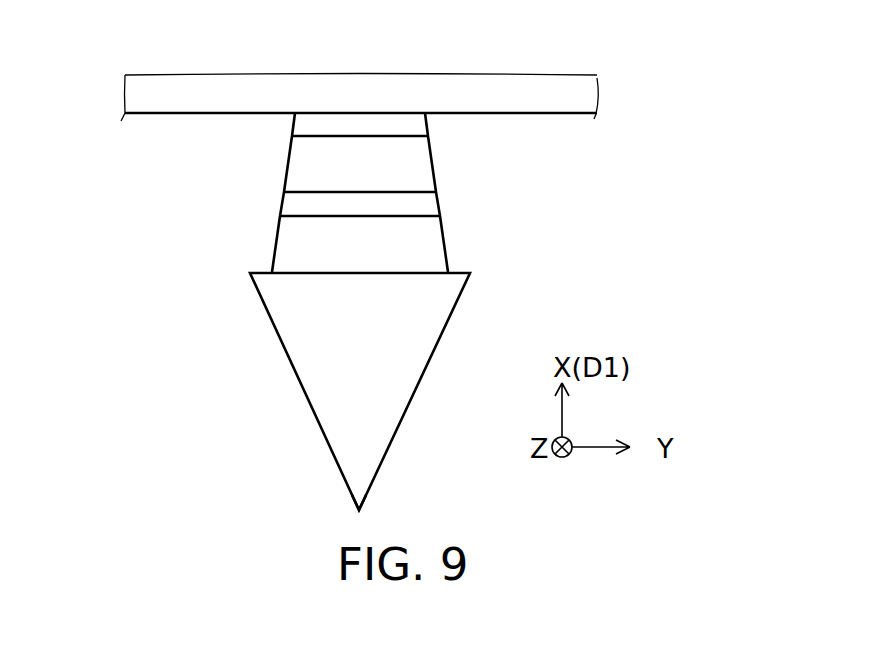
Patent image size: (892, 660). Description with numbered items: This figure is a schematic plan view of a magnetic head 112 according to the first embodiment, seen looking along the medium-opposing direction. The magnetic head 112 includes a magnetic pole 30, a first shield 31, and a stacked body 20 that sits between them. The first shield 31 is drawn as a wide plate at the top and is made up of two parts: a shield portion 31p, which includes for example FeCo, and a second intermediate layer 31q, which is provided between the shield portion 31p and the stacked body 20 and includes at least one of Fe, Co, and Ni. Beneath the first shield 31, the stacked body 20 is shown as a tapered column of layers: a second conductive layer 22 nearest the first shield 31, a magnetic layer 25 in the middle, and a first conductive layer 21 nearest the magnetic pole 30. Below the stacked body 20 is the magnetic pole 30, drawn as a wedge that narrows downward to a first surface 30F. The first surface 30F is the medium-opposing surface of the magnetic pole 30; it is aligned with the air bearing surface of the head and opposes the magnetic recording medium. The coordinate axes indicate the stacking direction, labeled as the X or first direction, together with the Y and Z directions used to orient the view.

The magnetic head 112 is at (692, 58).
The first shield 31 is at (684, 82).
The shield portion 31p is at (585, 94).
The second intermediate layer 31q is at (418, 127).
The stacked body 20 is at (500, 148).
The second conductive layer 22 is at (423, 168).
The magnetic layer 25 is at (423, 205).
The first conductive layer 21 is at (425, 242).
The magnetic pole 30 is at (373, 367).
The first surface 30F is at (360, 478).